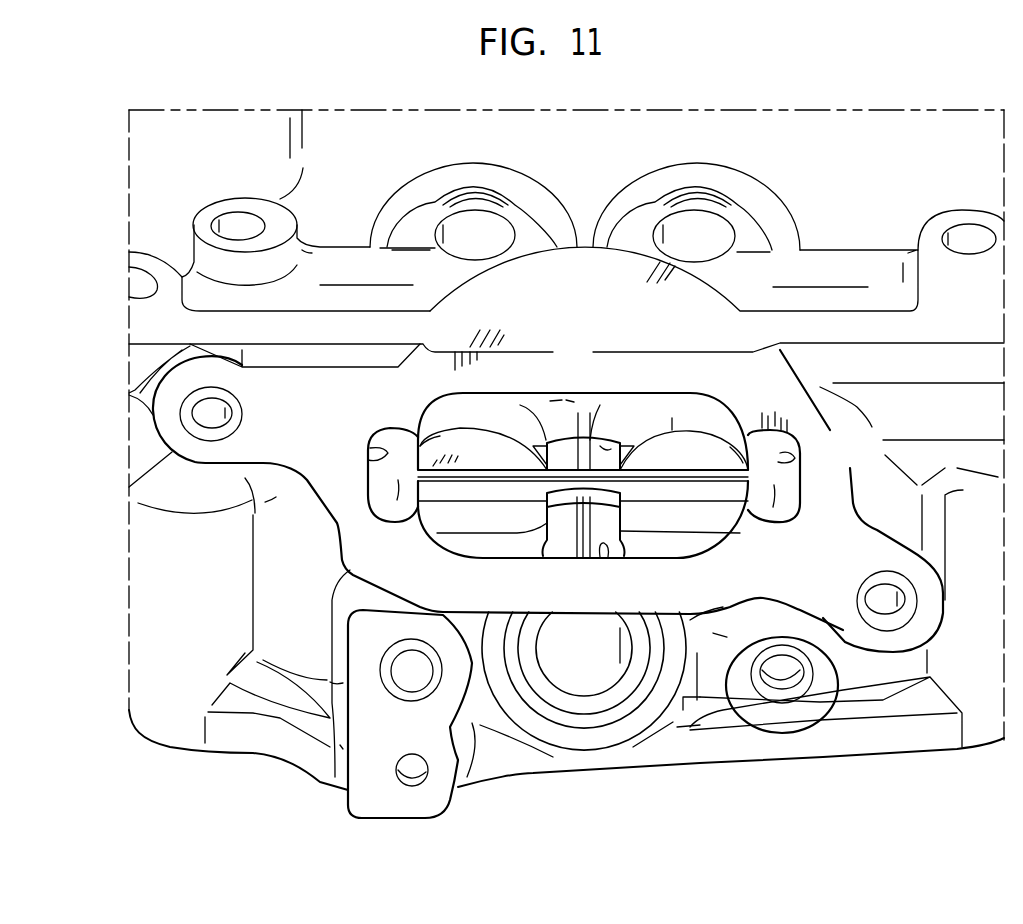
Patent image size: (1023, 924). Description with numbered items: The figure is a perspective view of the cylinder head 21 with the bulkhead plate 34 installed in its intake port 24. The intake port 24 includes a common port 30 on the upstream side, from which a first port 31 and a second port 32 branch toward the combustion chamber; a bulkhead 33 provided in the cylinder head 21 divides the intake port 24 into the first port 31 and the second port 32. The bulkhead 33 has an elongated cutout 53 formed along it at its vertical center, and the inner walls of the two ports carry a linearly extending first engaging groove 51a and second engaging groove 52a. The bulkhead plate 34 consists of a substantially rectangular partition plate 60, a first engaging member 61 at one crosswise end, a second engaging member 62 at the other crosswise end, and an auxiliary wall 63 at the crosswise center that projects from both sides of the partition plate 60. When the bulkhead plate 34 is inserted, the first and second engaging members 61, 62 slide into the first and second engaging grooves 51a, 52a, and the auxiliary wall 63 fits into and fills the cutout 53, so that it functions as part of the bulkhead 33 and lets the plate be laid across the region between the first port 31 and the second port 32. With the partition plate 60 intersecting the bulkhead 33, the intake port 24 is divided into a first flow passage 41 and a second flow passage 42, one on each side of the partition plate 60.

The cylinder head 21 is at (127, 182).
The intake port 24 is at (661, 390).
The common port 30 is at (607, 558).
The first port 31 is at (453, 438).
The second port 32 is at (722, 437).
The bulkhead 33 is at (583, 420).
The bulkhead plate 34 is at (805, 505).
The first flow passage 41 is at (547, 440).
The second flow passage 42 is at (635, 527).
The first engaging groove 51a is at (387, 457).
The second engaging groove 52a is at (792, 457).
The cutout 53 is at (557, 440).
The partition plate 60 is at (673, 494).
The first engaging member 61 is at (397, 503).
The second engaging member 62 is at (773, 507).
The auxiliary wall 63 is at (605, 447).